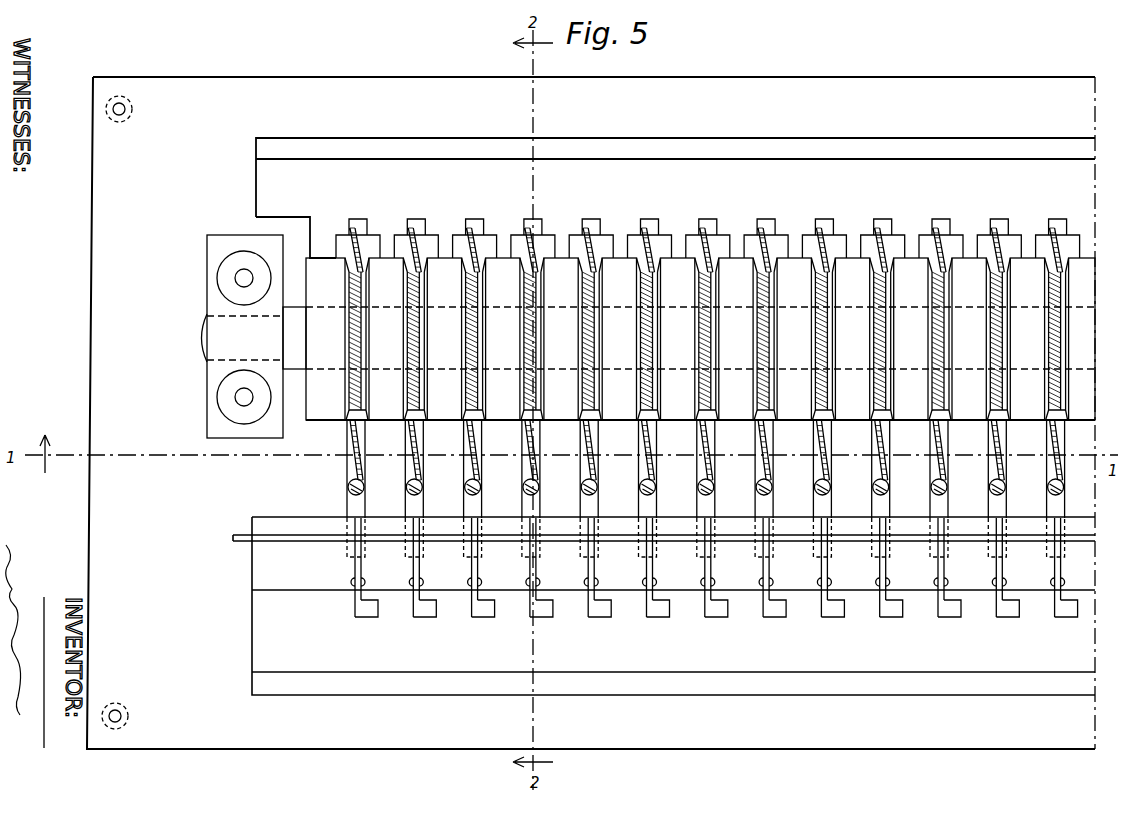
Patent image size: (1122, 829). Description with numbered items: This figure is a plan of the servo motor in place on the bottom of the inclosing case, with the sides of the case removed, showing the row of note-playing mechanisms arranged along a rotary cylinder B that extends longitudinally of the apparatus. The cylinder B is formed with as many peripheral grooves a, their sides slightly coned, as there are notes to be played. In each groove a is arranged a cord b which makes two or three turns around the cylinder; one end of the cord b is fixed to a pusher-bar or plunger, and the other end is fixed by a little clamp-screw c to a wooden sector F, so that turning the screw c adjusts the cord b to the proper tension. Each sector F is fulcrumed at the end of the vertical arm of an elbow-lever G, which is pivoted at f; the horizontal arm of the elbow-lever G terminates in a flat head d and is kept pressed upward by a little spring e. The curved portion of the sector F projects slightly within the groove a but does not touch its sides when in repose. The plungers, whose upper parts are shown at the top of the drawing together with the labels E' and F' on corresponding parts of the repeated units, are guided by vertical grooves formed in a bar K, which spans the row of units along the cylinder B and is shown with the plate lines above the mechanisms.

The bar K is at (675, 198).
The rotary cylinder B is at (700, 339).
The cap E' is at (708, 245).
The peripheral groove a is at (707, 339).
The cord b is at (942, 314).
The wooden sector F is at (706, 469).
The lever F' is at (419, 469).
The clamp-screw c is at (706, 491).
The pivot f is at (664, 543).
The elbow-lever G is at (706, 567).
The spring e is at (874, 584).
The flat head d is at (716, 615).